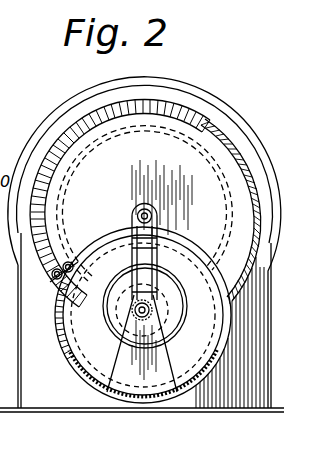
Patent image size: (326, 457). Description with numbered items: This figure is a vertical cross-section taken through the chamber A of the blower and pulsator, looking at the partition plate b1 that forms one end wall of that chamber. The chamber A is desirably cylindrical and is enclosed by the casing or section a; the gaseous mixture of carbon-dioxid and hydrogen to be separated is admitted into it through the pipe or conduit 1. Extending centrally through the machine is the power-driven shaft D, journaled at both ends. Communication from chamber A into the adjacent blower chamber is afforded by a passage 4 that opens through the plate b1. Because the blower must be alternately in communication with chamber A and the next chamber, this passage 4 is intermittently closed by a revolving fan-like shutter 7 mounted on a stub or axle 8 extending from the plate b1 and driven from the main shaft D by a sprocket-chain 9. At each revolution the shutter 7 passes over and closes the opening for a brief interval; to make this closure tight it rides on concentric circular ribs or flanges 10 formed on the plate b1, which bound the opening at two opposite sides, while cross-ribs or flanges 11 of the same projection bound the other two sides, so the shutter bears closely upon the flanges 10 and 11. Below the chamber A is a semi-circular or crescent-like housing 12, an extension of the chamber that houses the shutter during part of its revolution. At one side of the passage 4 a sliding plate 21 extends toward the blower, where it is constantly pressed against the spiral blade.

The pipe or conduit 1 is at (4, 140).
The casing or section a is at (203, 117).
The chamber A is at (145, 203).
The end plate or partition b1 is at (133, 211).
The shaft D is at (158, 212).
The sprocket-chain 9 is at (158, 260).
The concentric circular ribs or flanges 10 is at (97, 237).
The cross-ribs or flanges 11 is at (94, 250).
The semi-circular or crescent-like housing 12 is at (86, 371).
The stub or axle 8 is at (162, 307).
The revolving fan-like shutter 7 is at (172, 338).
The sliding plate 21 is at (66, 262).
The passage 4 is at (74, 268).